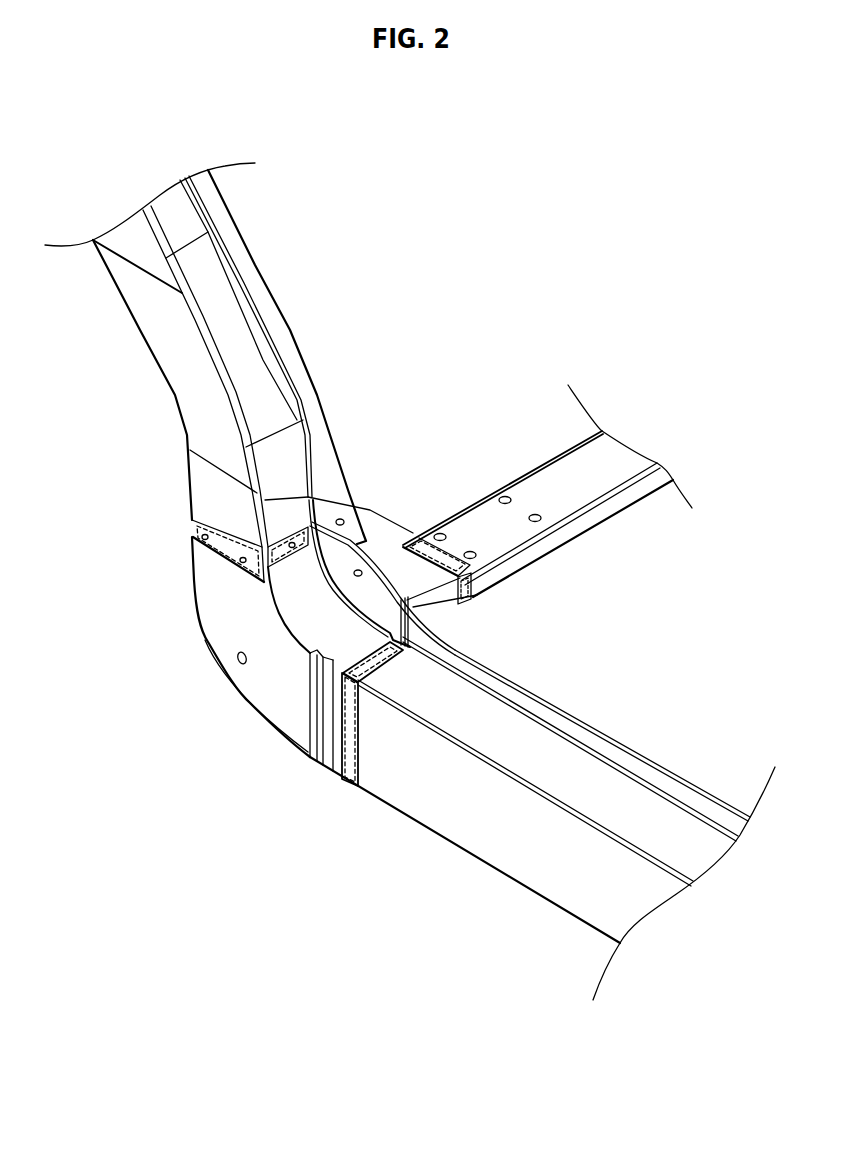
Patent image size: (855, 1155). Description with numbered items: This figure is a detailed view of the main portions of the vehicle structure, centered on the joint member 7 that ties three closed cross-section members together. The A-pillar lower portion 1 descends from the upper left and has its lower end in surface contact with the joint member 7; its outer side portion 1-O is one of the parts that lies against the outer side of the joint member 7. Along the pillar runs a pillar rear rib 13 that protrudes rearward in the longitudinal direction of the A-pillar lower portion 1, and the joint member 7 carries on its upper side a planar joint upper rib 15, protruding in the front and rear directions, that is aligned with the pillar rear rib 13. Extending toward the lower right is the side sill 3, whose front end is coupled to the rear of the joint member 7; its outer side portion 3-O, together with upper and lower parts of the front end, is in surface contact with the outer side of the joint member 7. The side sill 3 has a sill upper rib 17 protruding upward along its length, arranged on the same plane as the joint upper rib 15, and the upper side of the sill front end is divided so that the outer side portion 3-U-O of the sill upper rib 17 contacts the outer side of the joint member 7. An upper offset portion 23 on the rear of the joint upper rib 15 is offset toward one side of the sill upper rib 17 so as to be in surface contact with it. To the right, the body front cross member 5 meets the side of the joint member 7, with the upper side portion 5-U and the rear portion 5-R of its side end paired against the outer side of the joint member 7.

The A-pillar lower portion 1 is at (185, 367).
The pillar rear rib 13 is at (311, 391).
The joint upper rib 15 is at (382, 593).
The body front cross member 5 is at (577, 458).
The upper side portion of the body front cross member side end 5-U is at (446, 557).
The rear portion of the body front cross member side end 5-R is at (478, 597).
The upper offset portion 23 is at (432, 621).
The sill upper rib 17 is at (573, 726).
The outer side portion of the A-pillar lower portion 1-O is at (222, 548).
The joint member 7 is at (265, 697).
The side sill 3 is at (575, 875).
The outer side portion of the side sill 3-O is at (348, 741).
The outer side portion of the sill upper rib 3-U-O is at (378, 665).